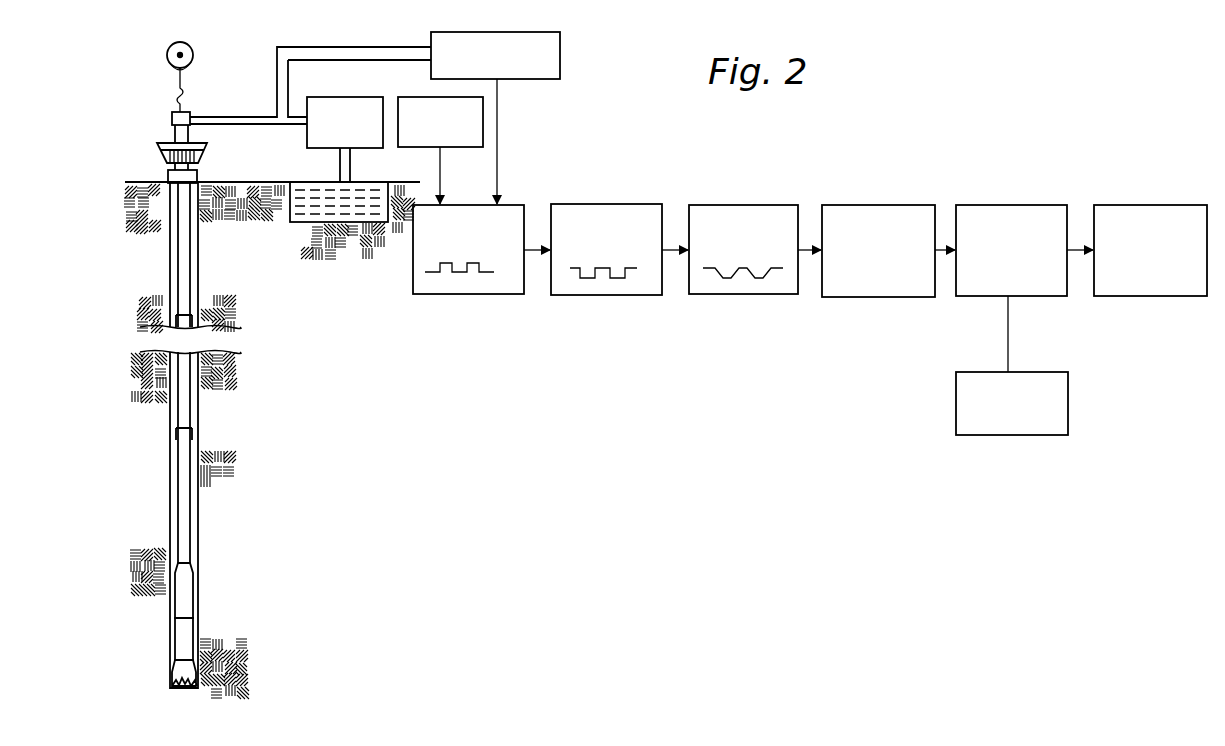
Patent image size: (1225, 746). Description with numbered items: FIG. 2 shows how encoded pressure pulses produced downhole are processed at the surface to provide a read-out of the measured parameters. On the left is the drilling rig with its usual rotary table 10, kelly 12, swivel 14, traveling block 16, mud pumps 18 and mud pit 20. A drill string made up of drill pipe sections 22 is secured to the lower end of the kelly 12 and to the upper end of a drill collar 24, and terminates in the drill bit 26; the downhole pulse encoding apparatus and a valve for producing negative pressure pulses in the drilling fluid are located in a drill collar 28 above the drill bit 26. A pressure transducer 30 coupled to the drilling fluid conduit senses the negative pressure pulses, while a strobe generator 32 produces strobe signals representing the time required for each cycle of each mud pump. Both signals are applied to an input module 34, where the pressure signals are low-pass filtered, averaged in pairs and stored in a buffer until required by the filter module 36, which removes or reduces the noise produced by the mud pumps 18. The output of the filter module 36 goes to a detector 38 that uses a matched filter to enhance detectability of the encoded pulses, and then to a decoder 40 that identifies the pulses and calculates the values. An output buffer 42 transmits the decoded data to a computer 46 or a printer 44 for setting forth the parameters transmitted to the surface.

The rotary table 10 is at (157, 154).
The kelly 12 is at (192, 250).
The swivel 14 is at (172, 112).
The traveling block 16 is at (170, 50).
The mud pumps 18 is at (342, 97).
The mud pit 20 is at (366, 182).
The drill pipe sections 22 is at (192, 412).
The drill collar 24 is at (193, 576).
The drill bit 26 is at (172, 678).
The drill collar 28 is at (195, 628).
The pressure transducer 30 is at (556, 32).
The strobe generator 32 is at (445, 97).
The input module 34 is at (515, 205).
The filter module 36 is at (612, 204).
The detector 38 is at (752, 205).
The decoder 40 is at (890, 205).
The output buffer 42 is at (972, 205).
The printer 44 is at (1068, 394).
The computer 46 is at (1166, 205).